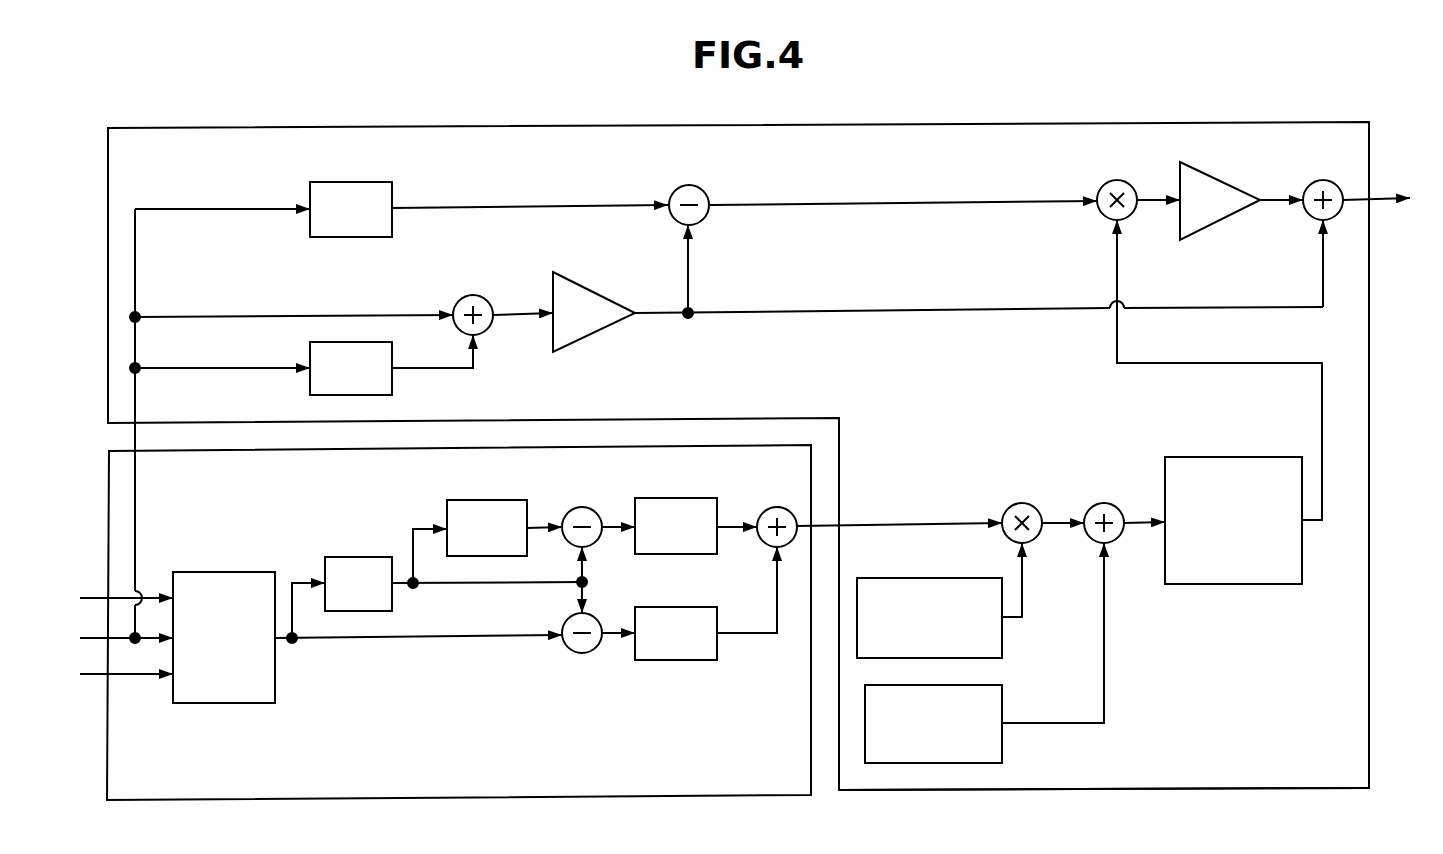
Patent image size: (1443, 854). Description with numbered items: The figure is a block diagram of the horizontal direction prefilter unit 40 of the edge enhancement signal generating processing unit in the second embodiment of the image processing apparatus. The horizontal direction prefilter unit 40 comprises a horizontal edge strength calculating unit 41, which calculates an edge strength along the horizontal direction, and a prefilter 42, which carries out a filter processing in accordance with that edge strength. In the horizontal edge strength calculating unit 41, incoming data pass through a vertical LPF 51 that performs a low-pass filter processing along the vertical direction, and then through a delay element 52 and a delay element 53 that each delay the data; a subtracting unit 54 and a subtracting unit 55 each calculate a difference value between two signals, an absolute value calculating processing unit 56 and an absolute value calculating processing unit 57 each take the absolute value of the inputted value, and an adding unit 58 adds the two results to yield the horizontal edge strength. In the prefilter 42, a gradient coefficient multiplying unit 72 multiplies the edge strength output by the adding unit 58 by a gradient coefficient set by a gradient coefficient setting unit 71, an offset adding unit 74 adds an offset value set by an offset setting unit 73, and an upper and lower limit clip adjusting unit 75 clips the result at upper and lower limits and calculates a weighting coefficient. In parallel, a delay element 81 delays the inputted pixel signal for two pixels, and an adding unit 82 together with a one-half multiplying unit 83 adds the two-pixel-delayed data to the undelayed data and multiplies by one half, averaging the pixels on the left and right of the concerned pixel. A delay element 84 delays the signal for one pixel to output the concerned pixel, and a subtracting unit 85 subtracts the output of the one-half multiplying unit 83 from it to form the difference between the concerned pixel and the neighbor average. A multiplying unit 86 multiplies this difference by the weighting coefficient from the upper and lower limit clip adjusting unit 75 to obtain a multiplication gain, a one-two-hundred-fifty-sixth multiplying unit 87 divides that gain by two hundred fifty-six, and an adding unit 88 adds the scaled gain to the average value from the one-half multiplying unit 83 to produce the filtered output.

The horizontal direction prefilter unit 40 is at (953, 95).
The horizontal edge strength calculating unit 41 is at (485, 798).
The prefilter 42 is at (1007, 790).
The vertical LPF 51 is at (200, 572).
The delay element 52 is at (345, 557).
The delay element 53 is at (465, 500).
The subtracting unit 54 is at (585, 507).
The subtracting unit 55 is at (580, 653).
The absolute value calculating processing unit 56 is at (660, 498).
The absolute value calculating processing unit 57 is at (675, 660).
The adding unit 58 is at (763, 541).
The gradient coefficient setting unit 71 is at (1003, 636).
The gradient coefficient multiplying unit 72 is at (1022, 503).
The offset setting unit 73 is at (1003, 743).
The offset adding unit 74 is at (1104, 503).
The upper and lower limit clip adjusting unit 75 is at (1250, 457).
The delay element 81 is at (393, 382).
The adding unit 82 is at (465, 295).
The ½ multiplying unit 83 is at (587, 283).
The delay element 84 is at (355, 182).
The subtracting unit 85 is at (688, 185).
The multiplying unit 86 is at (1110, 180).
The 1/256 multiplying unit 87 is at (1238, 218).
The adding unit 88 is at (1316, 180).